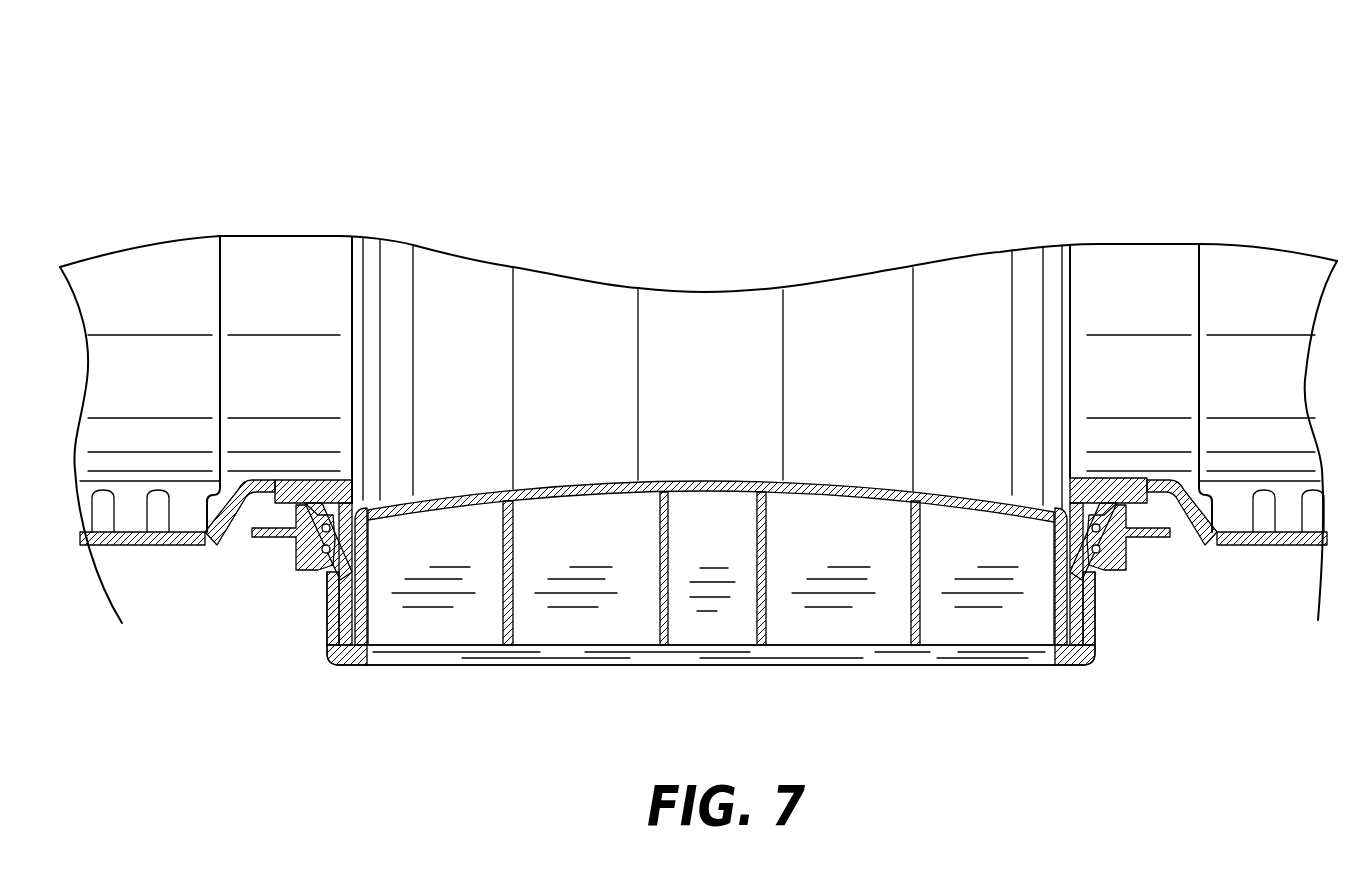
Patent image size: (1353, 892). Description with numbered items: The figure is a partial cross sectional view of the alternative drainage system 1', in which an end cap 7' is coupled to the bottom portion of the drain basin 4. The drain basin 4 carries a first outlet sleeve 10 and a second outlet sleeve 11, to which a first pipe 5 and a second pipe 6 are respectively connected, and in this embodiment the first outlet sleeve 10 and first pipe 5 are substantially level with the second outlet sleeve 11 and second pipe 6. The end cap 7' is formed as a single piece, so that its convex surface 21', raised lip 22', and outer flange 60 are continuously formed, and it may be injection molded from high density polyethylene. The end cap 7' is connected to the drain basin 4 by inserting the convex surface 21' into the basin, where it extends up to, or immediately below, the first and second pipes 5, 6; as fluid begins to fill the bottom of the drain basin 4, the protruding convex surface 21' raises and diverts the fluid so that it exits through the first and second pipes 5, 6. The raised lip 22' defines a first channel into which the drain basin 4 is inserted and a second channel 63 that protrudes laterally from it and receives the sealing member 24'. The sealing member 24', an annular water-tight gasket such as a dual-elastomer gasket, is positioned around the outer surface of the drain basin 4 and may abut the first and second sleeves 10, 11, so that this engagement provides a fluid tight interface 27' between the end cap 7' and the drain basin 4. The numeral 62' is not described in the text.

The drainage system 1' is at (698, 337).
The drain basin 4 is at (445, 218).
The first pipe 5 is at (98, 523).
The first outlet sleeve 10 is at (200, 550).
The fluid tight interface 27' is at (367, 491).
The outer flange 60 is at (263, 538).
The convex surface 21' is at (711, 515).
The end cap 7' is at (711, 669).
The raised lip 22' is at (1121, 595).
The inner frame wall 62' is at (1038, 621).
The second channel 63 is at (1100, 572).
The sealing member 24' is at (1149, 553).
The second pipe 6 is at (1233, 510).
The second outlet sleeve 11 is at (1253, 540).